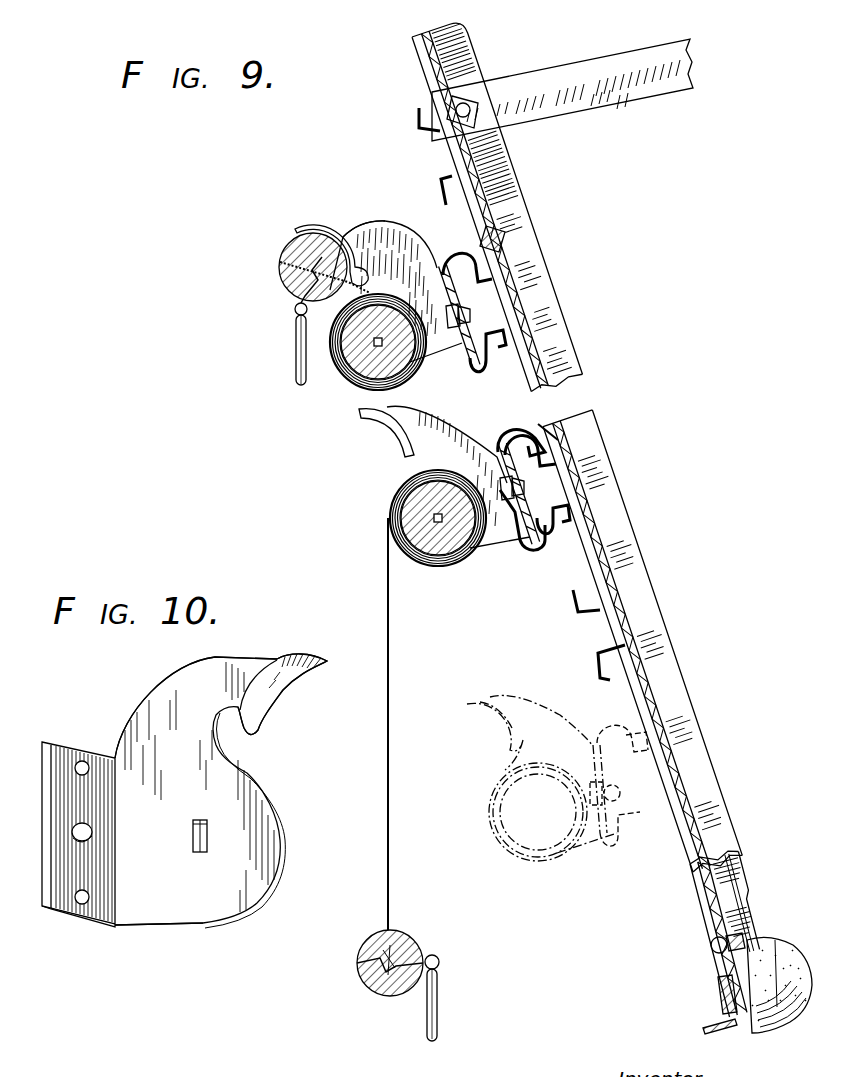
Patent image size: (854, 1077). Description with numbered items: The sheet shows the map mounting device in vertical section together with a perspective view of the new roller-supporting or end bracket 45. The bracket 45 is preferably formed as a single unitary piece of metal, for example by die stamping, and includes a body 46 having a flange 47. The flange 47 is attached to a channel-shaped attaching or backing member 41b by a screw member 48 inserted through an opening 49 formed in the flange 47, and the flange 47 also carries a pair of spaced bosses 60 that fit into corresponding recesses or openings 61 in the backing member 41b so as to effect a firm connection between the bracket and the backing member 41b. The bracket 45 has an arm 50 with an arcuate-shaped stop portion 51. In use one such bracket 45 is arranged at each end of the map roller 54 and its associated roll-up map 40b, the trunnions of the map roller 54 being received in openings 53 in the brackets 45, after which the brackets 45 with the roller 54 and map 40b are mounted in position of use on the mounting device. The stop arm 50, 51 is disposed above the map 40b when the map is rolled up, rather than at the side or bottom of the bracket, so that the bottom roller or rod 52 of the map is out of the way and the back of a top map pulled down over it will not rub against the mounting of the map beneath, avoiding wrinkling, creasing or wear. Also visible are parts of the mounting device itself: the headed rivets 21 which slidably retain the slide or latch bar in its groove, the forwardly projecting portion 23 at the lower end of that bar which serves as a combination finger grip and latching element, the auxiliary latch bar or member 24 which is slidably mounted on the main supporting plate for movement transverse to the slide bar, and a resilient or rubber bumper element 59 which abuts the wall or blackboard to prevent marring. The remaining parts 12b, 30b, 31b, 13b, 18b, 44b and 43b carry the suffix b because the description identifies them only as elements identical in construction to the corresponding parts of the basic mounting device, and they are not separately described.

In FIG. 9, the rail 12b is at (652, 588).
In FIG. 9, the cross bar 30b is at (640, 100).
In FIG. 9, the bolt 31b is at (463, 102).
In FIG. 9, the rail hook 13b is at (416, 122).
In FIG. 9, the hook 18b is at (438, 183).
In FIG. 9, the headed rivets 21 is at (710, 948).
In FIG. 9, the clip 44b is at (488, 270).
In FIG. 9, the clip 43b is at (505, 342).
In FIG. 9, the screw member 48 is at (468, 316).
In FIG. 9, the channel-shaped attaching or backing member 41b is at (455, 350).
In FIG. 9, the roller-supporting or end bracket 45 is at (412, 236).
In FIG. 10, the roller-supporting or end bracket 45 is at (147, 692).
In FIG. 9, the arm 50 is at (343, 235).
In FIG. 10, the arm 50 is at (206, 680).
In FIG. 9, the arcuate-shaped stop portion 51 is at (298, 236).
In FIG. 10, the arcuate-shaped stop portion 51 is at (272, 692).
In FIG. 9, the bottom roller or rod 52 is at (296, 282).
In FIG. 9, the map roller 54 is at (365, 388).
In FIG. 9, the roll-up map 40b is at (358, 376).
In FIG. 9, the recesses or openings 61 is at (505, 438).
In FIG. 9, the spaced bosses 60 is at (497, 468).
In FIG. 10, the spaced bosses 60 is at (84, 762).
In FIG. 9, the resilient or rubber bumper elements 59 is at (780, 940).
In FIG. 9, the auxiliary latch bar or member 24 is at (716, 996).
In FIG. 9, the forwardly projecting portion 23 is at (710, 1036).
In FIG. 10, the flange 47 is at (56, 908).
In FIG. 10, the opening 49 is at (93, 832).
In FIG. 10, the openings 53 is at (208, 836).
In FIG. 10, the body 46 is at (210, 905).